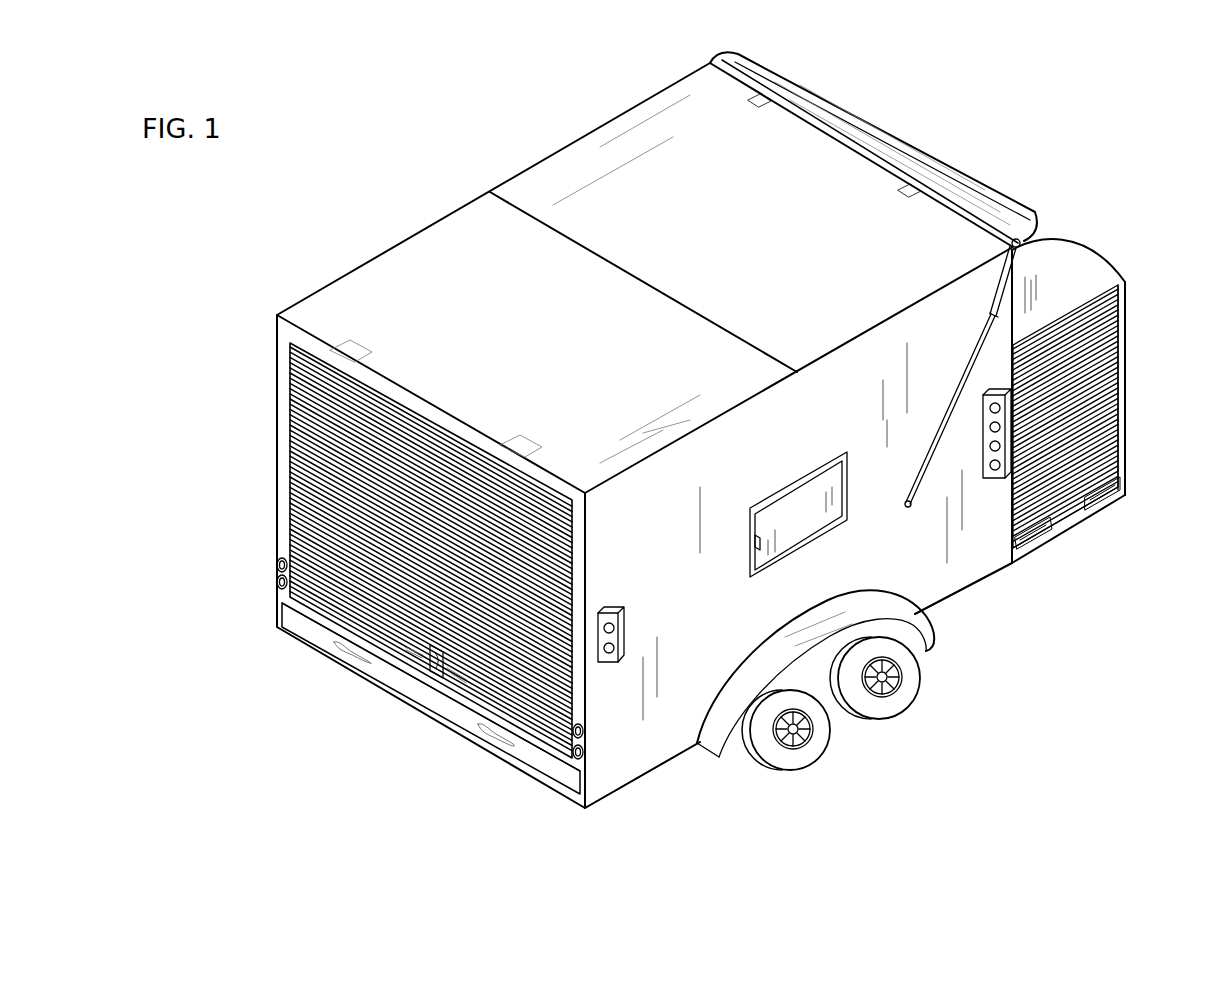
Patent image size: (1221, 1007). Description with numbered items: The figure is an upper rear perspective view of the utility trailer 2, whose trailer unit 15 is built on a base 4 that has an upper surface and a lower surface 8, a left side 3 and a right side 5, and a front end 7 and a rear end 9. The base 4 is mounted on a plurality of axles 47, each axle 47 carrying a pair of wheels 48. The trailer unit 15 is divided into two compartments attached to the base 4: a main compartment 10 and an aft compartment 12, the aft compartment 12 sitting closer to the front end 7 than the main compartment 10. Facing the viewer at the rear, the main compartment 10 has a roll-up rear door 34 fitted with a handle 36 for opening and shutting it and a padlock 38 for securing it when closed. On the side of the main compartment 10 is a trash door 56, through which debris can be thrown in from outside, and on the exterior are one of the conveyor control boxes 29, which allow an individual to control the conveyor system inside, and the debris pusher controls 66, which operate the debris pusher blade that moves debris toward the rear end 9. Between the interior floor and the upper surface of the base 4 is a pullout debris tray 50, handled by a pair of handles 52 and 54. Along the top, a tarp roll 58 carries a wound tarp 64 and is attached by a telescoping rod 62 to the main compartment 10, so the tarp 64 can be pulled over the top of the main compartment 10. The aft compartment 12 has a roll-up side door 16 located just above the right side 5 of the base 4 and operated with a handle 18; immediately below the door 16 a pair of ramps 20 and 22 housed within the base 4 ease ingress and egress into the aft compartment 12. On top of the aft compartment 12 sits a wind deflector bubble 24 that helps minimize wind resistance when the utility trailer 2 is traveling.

The utility trailer 2 is at (402, 165).
The left side 3 is at (303, 628).
The base 4 is at (647, 777).
The right side 5 is at (677, 760).
The front end 7 is at (1125, 492).
The lower surface 8 is at (970, 588).
The rear end 9 is at (538, 777).
The main compartment 10 is at (607, 143).
The aft compartment 12 is at (827, 118).
The trailer unit 15 is at (465, 222).
The roll-up side door 16 is at (1088, 450).
The handle 18 is at (1062, 507).
The ramp 20 is at (1030, 548).
The ramp 22 is at (1100, 510).
The wind deflector bubble 24 is at (1070, 260).
The conveyor control box 29 is at (610, 663).
The roll-up rear door 34 is at (312, 407).
The handle 36 is at (417, 650).
The padlock 38 is at (433, 670).
The axle 47 is at (797, 733).
The wheels 48 is at (767, 785).
The pullout debris tray 50 is at (300, 635).
The handle 52 is at (343, 653).
The handle 54 is at (493, 745).
The trash door 56 is at (822, 520).
The tarp roll 58 is at (1028, 232).
The telescoping rod 62 is at (990, 327).
The tarp 64 is at (905, 182).
The debris pusher controls 66 is at (997, 478).